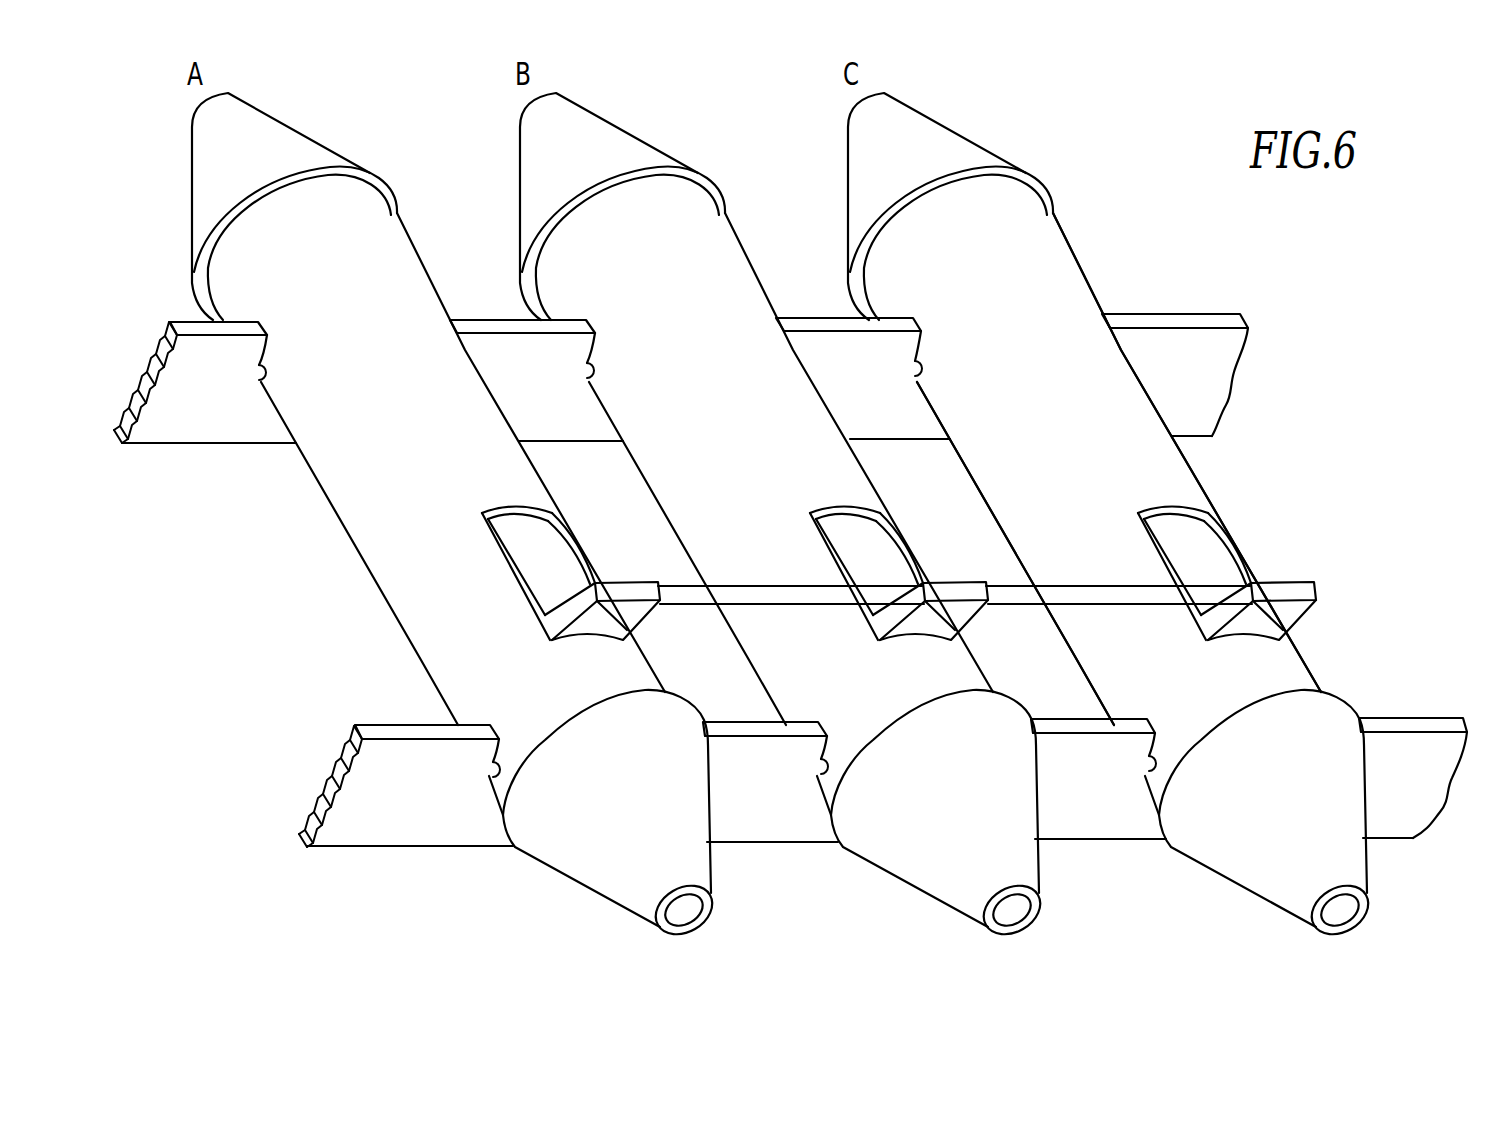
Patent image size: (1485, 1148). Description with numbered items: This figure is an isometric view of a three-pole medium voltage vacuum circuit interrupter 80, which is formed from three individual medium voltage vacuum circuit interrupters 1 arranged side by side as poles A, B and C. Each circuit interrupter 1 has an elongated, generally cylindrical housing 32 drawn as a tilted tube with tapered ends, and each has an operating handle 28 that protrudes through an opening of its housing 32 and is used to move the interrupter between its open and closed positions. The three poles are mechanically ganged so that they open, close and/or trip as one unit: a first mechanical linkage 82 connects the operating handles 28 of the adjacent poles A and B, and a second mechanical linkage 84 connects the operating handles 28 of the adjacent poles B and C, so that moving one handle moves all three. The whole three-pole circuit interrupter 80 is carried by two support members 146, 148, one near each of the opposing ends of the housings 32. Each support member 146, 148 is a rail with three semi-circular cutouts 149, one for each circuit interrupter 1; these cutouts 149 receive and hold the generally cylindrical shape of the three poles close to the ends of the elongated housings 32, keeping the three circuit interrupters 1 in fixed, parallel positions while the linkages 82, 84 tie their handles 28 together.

The medium voltage vacuum circuit interrupter 1 is at (172, 152).
The operating handle 28 is at (620, 581).
The housing 32 is at (1085, 273).
The three-pole medium voltage vacuum circuit interrupter 80 is at (984, 545).
The first mechanical linkage 82 is at (768, 604).
The second mechanical linkage 84 is at (1097, 604).
The support member 146 is at (195, 445).
The support member 148 is at (428, 848).
The semi-circular cutout 149 is at (259, 378).